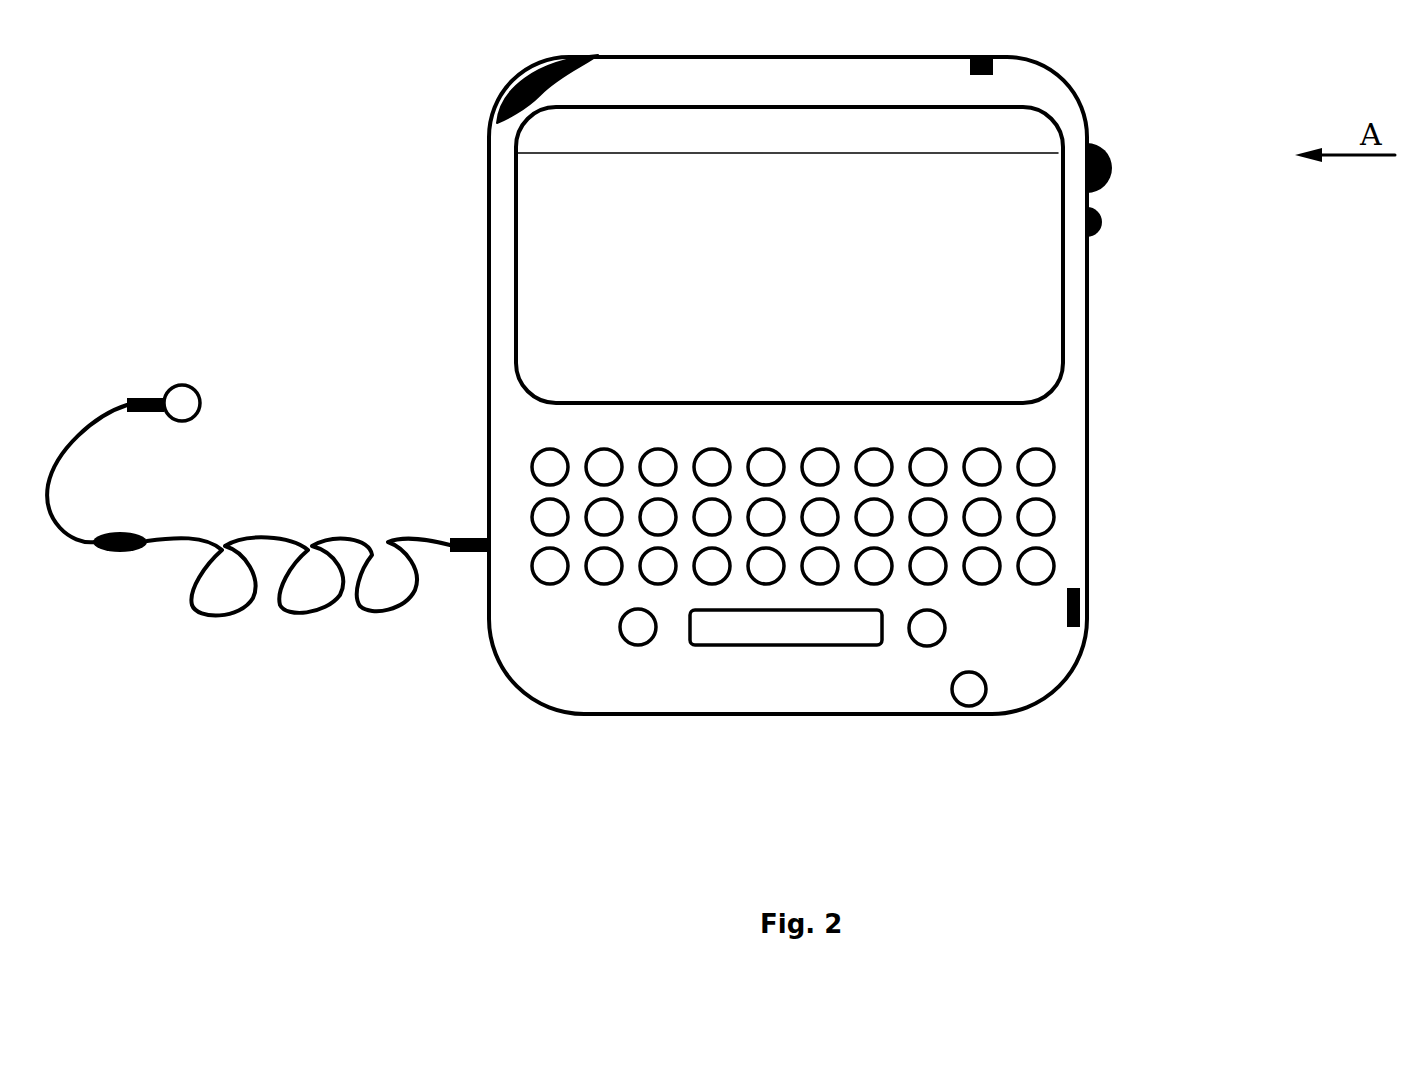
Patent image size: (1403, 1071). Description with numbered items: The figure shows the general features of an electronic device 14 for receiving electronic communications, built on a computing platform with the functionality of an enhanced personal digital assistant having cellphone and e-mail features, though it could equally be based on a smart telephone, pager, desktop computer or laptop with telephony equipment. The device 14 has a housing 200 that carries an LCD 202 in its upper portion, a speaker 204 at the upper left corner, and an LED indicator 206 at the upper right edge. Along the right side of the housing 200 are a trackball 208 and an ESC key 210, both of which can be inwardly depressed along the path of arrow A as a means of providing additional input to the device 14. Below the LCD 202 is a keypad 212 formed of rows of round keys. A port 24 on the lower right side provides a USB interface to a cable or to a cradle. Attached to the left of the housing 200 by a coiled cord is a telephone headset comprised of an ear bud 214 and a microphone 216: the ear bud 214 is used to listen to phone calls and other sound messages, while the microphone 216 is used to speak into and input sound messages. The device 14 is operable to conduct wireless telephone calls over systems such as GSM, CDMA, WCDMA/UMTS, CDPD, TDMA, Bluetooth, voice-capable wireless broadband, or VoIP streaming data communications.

The electronic device 14 is at (751, 740).
The port 24 is at (1073, 627).
The housing 200 is at (1009, 700).
The LCD 202 is at (514, 386).
The speaker 204 is at (515, 83).
The LED indicator 206 is at (993, 64).
The trackball 208 is at (1113, 168).
The ESC key 210 is at (1107, 222).
The keypad 212 is at (1078, 528).
The ear bud 214 is at (220, 395).
The microphone 216 is at (160, 526).